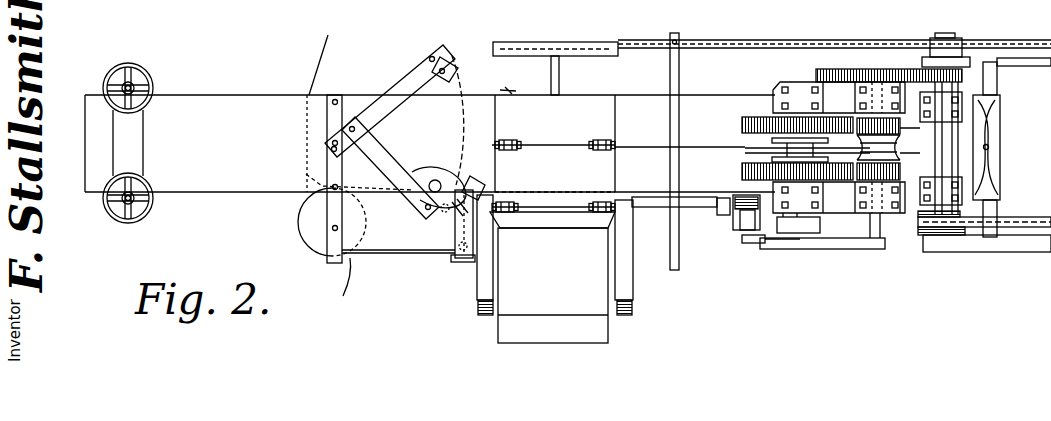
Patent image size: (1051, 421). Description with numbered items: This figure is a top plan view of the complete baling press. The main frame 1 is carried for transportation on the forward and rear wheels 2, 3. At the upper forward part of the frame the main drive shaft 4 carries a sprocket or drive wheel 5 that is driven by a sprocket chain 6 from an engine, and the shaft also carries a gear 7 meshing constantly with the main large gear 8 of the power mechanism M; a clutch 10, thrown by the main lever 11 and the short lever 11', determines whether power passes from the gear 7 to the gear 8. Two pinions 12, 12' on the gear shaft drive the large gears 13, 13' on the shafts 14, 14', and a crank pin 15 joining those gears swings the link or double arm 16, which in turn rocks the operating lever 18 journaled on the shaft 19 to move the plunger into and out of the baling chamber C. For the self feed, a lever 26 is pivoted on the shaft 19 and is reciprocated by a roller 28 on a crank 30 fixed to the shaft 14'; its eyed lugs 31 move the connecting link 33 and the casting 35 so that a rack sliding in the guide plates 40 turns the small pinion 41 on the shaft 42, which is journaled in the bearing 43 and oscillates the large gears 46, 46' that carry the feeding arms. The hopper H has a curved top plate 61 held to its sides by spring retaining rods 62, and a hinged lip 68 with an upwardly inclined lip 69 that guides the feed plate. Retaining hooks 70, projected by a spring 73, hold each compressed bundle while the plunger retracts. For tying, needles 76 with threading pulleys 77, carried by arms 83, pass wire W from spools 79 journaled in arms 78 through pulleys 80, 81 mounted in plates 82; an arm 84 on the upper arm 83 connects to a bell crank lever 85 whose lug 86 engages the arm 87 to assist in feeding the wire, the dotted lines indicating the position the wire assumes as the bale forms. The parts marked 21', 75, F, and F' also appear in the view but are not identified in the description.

The wire W is at (314, 63).
The main frame 1 is at (685, 100).
The forward wheels 2 is at (998, 48).
The rear wheels 3 is at (598, 53).
The main drive shaft 4 is at (945, 144).
The sprocket or drive wheel 5 is at (935, 252).
The sprocket chain 6 is at (1002, 217).
The gear 7 is at (968, 77).
The main large gear 8 is at (838, 69).
The clutch 10 is at (960, 57).
The main lever 11 is at (796, 63).
The short lever 11' is at (594, 25).
The gear or pinion 12 is at (971, 147).
The gear or pinion 12' is at (975, 172).
The large gear 13 is at (777, 95).
The large gear 13' is at (769, 166).
The shaft 14 is at (821, 63).
The short shaft 14' is at (823, 266).
The crank pin 15 is at (772, 145).
The link or double arm 16 is at (788, 150).
The operating lever 18 is at (895, 150).
The shaft 19 is at (880, 225).
The brace 21' is at (643, 169).
The lever 26 is at (862, 250).
The roller 28 is at (803, 214).
The crank 30 is at (810, 233).
The eyed lugs 31 is at (786, 244).
The connecting link 33 is at (752, 240).
The casting 35 is at (750, 242).
The guide plates 40 is at (783, 248).
The small pinion 41 is at (740, 235).
The shaft 42 is at (652, 208).
The bearing 43 is at (718, 210).
The large gear 46 is at (467, 277).
The large gear 46' is at (646, 273).
The curved top plate 61 is at (552, 109).
The spring retaining rods 62 is at (574, 143).
The lip 68 is at (548, 216).
The upwardly inclined lip 69 is at (553, 285).
The retaining hooks 70 is at (482, 126).
The spring 73 is at (503, 95).
The brace 75 is at (488, 100).
The needles 76 is at (456, 64).
The threading shives or pulleys 77 is at (440, 223).
The arms 78 is at (322, 251).
The spools 79 is at (339, 289).
The pulley 80 is at (467, 262).
The pulley 81 is at (488, 202).
The plates 82 is at (460, 230).
The arms 83 is at (384, 106).
The arm 84 is at (306, 174).
The bell crank lever 85 is at (433, 184).
The projection or lug 86 is at (490, 154).
The arm 87 is at (528, 200).
The hopper H is at (491, 78).
The baling chamber C is at (627, 76).
The power mechanism M is at (839, 135).
The frame member F is at (921, 113).
The frame member F' is at (828, 224).